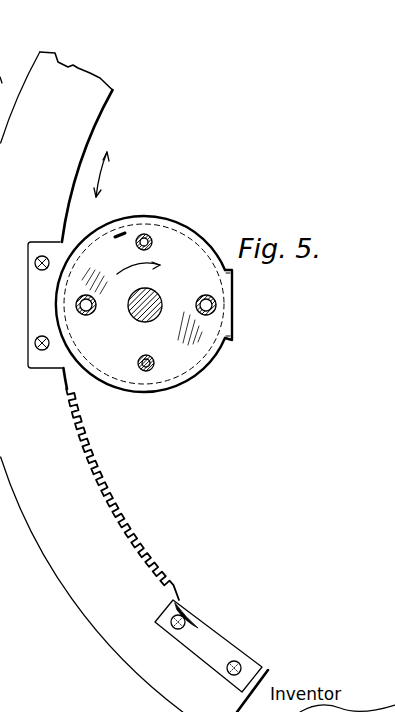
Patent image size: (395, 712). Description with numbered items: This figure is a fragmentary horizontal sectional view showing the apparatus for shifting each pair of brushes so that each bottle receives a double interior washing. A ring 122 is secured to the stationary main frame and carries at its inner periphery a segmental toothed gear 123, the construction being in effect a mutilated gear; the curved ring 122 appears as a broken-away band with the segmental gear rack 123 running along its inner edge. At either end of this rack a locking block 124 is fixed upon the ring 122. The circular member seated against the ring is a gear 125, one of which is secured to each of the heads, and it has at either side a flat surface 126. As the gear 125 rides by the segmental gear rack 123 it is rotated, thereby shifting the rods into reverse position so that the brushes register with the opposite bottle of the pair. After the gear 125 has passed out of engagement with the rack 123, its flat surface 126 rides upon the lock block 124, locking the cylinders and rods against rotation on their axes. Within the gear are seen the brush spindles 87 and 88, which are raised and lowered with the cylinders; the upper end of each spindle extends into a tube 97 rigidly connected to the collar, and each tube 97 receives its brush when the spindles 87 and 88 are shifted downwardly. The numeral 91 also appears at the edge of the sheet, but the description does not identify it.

The ring 122 is at (90, 106).
The segmental toothed gear 123 is at (101, 488).
The locking block 124 is at (215, 646).
The gear 125 is at (234, 283).
The flat surface 126 is at (234, 313).
The spindle 87 is at (147, 238).
The spindle 88 is at (151, 367).
The tube 97 is at (152, 242).
The adjacent member 91 is at (11, 553).